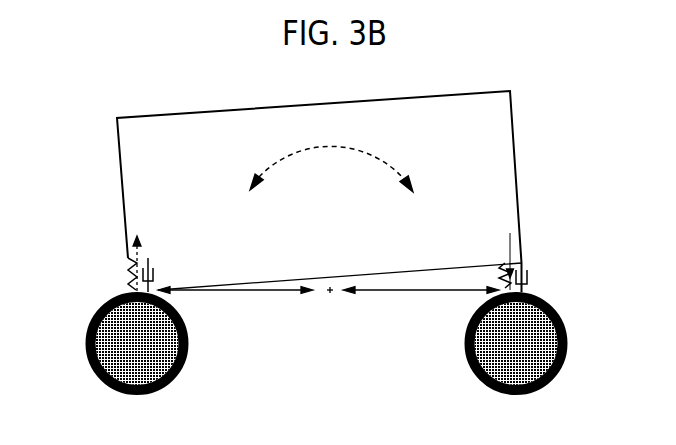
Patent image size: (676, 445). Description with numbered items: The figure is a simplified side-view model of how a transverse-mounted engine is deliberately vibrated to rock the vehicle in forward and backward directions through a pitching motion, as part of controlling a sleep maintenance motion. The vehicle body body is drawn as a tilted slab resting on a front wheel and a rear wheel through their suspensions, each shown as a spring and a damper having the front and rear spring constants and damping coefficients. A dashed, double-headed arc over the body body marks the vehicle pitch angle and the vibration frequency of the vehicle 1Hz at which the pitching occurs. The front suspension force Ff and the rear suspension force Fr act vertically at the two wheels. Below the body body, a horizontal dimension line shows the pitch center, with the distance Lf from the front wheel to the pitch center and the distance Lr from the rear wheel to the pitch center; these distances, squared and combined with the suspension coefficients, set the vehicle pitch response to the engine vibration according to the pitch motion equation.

The vehicle body is at (319, 190).
The frequency of vibration of the vehicle 1Hz is at (331, 151).
The front suspension force Ff is at (140, 248).
The rear suspension force Fr is at (510, 250).
The distance between front wheel and pitch center Lf is at (235, 276).
The distance between rear wheel and pitch center Lr is at (421, 277).